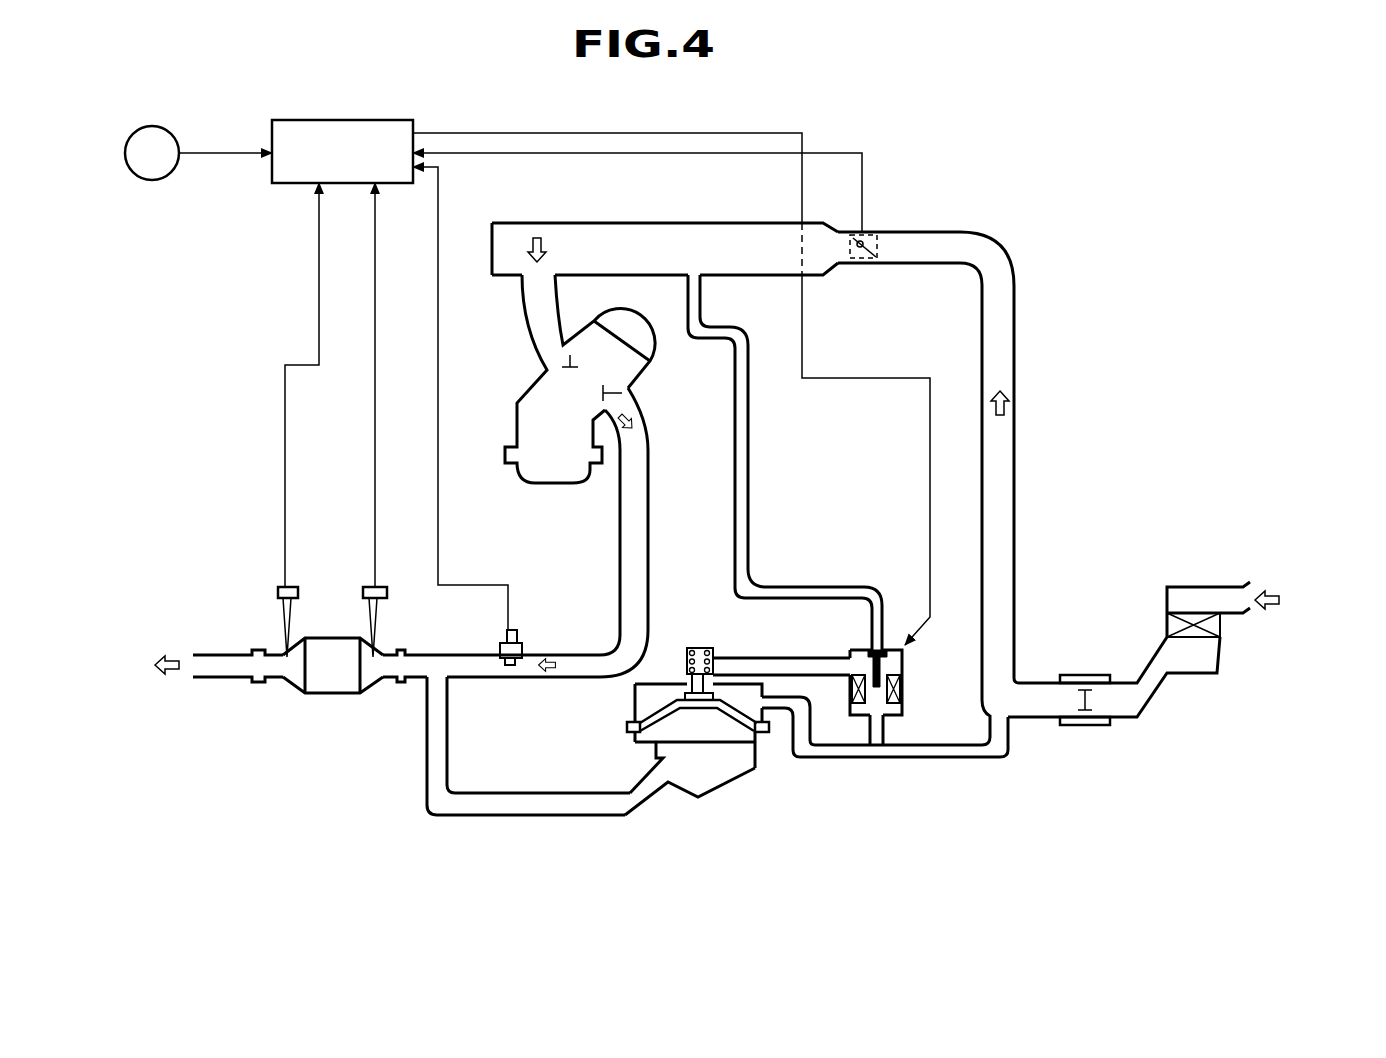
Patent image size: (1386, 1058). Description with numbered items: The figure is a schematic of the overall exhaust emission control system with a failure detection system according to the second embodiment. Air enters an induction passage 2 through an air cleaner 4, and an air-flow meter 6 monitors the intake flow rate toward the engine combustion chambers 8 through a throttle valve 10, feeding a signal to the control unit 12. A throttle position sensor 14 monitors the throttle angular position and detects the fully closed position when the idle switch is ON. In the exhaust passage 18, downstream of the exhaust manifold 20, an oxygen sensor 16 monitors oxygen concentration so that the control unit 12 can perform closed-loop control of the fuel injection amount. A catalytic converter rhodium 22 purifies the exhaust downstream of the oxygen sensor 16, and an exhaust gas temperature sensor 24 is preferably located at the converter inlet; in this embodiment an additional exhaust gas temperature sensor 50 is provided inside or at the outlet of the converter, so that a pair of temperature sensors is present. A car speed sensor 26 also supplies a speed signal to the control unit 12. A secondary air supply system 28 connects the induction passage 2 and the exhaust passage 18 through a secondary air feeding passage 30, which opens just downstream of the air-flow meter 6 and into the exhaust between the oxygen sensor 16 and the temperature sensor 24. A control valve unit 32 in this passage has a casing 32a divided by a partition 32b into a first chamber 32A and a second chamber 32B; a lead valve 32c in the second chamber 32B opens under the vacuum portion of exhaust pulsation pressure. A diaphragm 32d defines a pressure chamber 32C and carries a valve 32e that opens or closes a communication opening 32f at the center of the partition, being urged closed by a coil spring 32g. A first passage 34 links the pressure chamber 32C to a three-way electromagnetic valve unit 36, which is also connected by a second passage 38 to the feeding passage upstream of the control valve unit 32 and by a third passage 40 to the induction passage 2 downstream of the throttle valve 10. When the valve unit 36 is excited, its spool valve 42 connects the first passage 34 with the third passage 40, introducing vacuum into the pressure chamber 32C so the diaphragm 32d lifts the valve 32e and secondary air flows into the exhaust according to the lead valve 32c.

The induction passage 2 is at (1008, 497).
The air cleaner 4 is at (1190, 618).
The air-flow meter 6 is at (1085, 675).
The engine combustion chambers 8 is at (538, 383).
The throttle valve 10 is at (876, 253).
The control unit 12 is at (330, 120).
The throttle position sensor 14 is at (880, 256).
The oxygen sensor 16 is at (507, 634).
The exhaust passage 18 is at (500, 678).
The exhaust manifold 20 is at (625, 517).
The catalytic converter rhodium 22 is at (333, 692).
The exhaust gas temperature sensor 24 is at (387, 592).
The car speed sensor 26 is at (157, 126).
The secondary air supply system 28 is at (598, 818).
The secondary air feeding passage 30 is at (820, 757).
The control valve unit 32 is at (714, 721).
The first chamber 32A is at (648, 690).
The second chamber 32B is at (652, 738).
The pressure chamber 32C is at (685, 623).
The casing 32a is at (646, 714).
The partition 32b is at (828, 658).
The lead valve 32c is at (692, 753).
The diaphragm 32d is at (712, 672).
The valve 32e is at (712, 677).
The communication opening 32f is at (697, 712).
The coil spring 32g is at (687, 650).
The first passage 34 is at (828, 677).
The three-way electromagnetic valve unit 36 is at (906, 695).
The second passage 38 is at (883, 731).
The third passage 40 is at (748, 513).
The spool valve 42 is at (880, 667).
The exhaust gas temperature sensor 50 is at (278, 592).